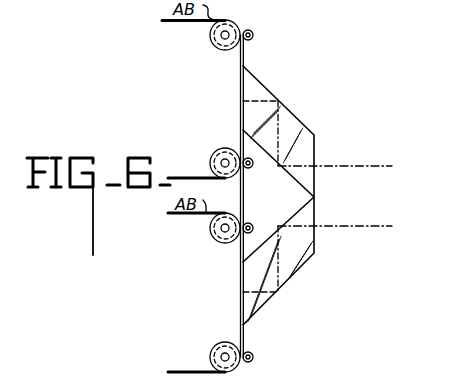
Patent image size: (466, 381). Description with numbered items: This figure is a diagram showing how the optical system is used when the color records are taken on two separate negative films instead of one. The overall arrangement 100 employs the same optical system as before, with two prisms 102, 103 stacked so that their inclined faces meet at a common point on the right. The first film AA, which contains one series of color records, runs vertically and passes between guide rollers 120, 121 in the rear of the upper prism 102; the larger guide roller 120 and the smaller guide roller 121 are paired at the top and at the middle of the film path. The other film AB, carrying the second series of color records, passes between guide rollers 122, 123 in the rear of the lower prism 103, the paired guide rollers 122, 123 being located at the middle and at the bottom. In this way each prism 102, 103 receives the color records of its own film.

The optical scanning apparatus 100 is at (344, 4).
The prism 102 is at (292, 110).
The prism 103 is at (291, 272).
The guide roller 120 is at (211, 35).
The guide roller 121 is at (253, 35).
The guide roller 122 is at (211, 228).
The guide roller 123 is at (251, 224).